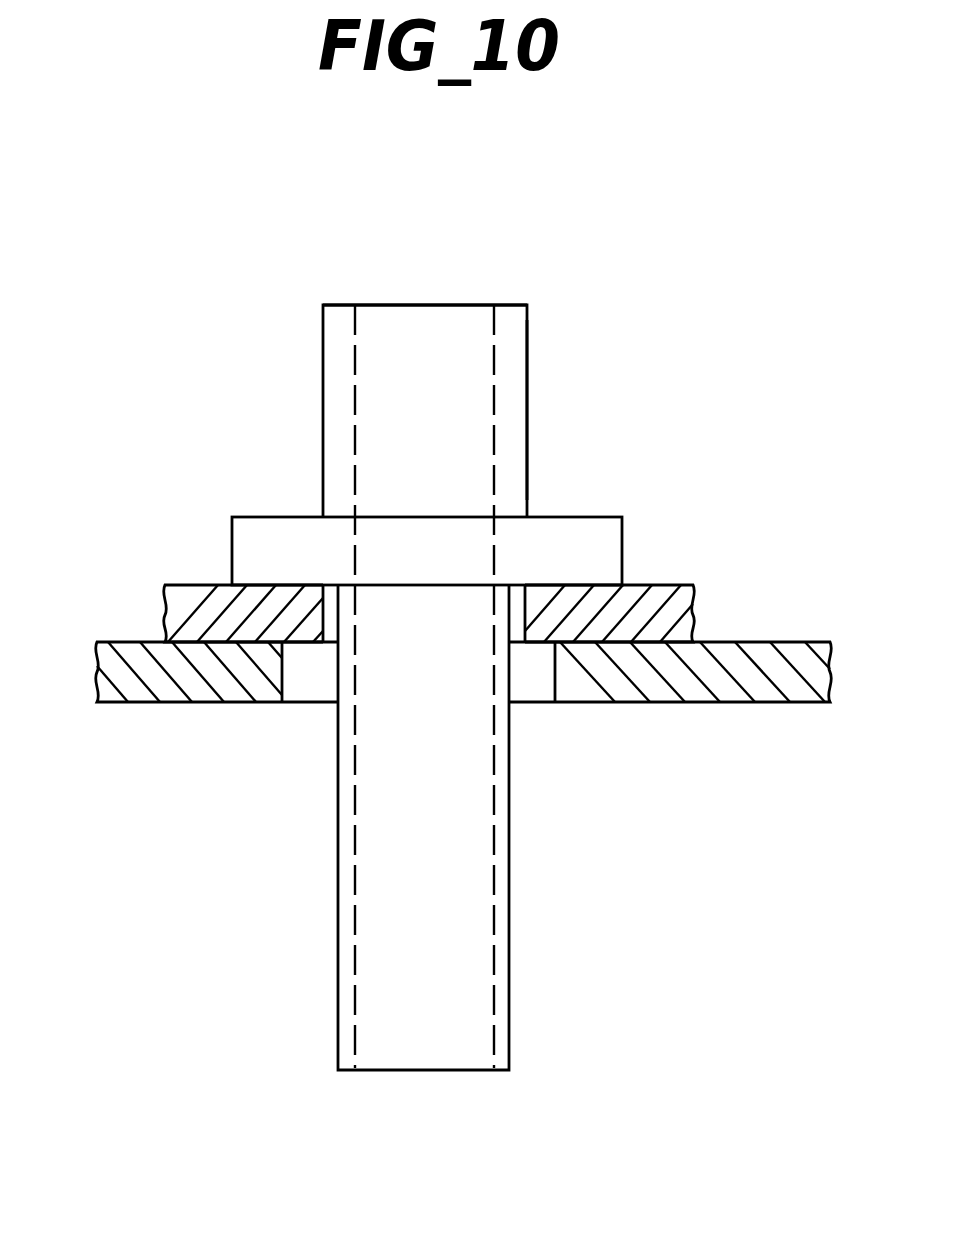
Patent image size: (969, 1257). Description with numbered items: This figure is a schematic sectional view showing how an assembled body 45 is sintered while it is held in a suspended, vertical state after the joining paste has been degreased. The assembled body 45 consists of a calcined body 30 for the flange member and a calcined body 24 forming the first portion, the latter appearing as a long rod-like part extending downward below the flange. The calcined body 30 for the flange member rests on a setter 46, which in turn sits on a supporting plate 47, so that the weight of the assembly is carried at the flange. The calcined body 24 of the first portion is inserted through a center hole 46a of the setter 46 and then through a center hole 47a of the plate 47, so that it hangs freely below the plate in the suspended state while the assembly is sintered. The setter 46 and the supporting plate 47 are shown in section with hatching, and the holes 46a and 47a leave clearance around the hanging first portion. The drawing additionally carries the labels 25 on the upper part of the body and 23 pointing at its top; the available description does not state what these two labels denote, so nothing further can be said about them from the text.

The pin 23 is at (519, 300).
The upper pin portion 25 is at (340, 317).
The calcined body as the first portion 24 is at (505, 880).
The calcined body for the flange member 30 is at (600, 528).
The assembled body 45 is at (560, 397).
The setter 46 is at (660, 595).
The center hole of the setter 46a is at (330, 613).
The supporting plate 47 is at (793, 655).
The center hole of the plate 47a is at (288, 674).